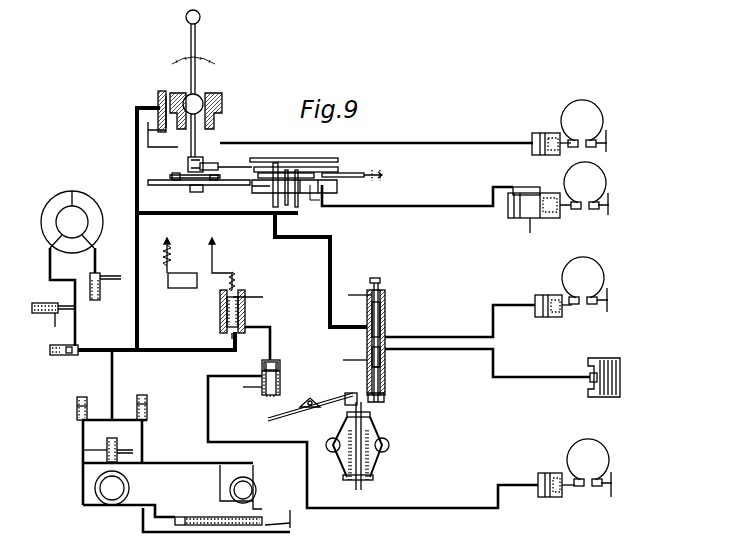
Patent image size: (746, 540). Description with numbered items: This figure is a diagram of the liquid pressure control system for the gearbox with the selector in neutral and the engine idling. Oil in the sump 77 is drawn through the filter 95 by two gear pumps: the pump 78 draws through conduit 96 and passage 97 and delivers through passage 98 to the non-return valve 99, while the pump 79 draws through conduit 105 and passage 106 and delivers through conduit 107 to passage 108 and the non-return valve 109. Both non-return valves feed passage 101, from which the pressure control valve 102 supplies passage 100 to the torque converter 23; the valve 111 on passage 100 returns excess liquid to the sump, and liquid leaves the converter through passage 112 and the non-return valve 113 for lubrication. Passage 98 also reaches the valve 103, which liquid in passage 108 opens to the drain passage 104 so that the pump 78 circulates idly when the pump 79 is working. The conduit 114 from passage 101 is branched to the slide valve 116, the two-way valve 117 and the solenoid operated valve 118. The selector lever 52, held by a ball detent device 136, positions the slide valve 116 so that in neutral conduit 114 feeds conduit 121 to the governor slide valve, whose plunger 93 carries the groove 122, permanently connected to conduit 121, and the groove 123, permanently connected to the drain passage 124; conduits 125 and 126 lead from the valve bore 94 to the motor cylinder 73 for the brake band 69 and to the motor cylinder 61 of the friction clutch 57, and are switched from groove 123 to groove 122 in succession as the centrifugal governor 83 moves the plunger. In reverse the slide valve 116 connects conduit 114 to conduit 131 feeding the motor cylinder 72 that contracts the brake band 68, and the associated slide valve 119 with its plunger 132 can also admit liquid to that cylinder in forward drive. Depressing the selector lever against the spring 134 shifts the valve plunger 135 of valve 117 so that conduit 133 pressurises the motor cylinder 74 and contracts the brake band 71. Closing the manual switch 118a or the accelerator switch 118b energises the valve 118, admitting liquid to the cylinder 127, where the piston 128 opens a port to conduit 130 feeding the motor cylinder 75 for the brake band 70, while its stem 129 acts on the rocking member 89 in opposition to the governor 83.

The selector lever 52 is at (197, 78).
The spring 134 is at (222, 112).
The two-way valve 117 is at (158, 103).
The valve plunger 135 is at (158, 117).
The conduit 121 is at (330, 261).
The slide valve 116 is at (292, 162).
The slide valve 119 is at (307, 193).
The ball detent device 136 is at (205, 186).
The plunger 132 is at (350, 172).
The conduit 133 is at (431, 142).
The conduit 131 is at (438, 205).
The motor cylinder 74 is at (540, 132).
The brake band 71 is at (573, 104).
The motor cylinder 72 is at (515, 218).
The brake band 68 is at (567, 176).
The motor cylinder 73 is at (538, 296).
The brake band 69 is at (568, 269).
The multi-plate friction clutch 57 is at (614, 358).
The motor cylinder 61 is at (590, 375).
The motor cylinder 75 is at (540, 473).
The brake band 70 is at (586, 440).
The conduit 125 is at (457, 337).
The conduit 126 is at (468, 350).
The torque converter 23 is at (85, 202).
The passage 112 is at (97, 262).
The non-return valve 113 is at (100, 285).
The passage 100 is at (77, 334).
The valve 111 is at (55, 303).
The pressure control valve 102 is at (70, 355).
The conduit 114 is at (110, 340).
The passage 101 is at (114, 375).
The switch 118a is at (197, 275).
The switch 118b is at (185, 288).
The solenoid operated valve 118 is at (247, 318).
The cylinder 127 is at (280, 363).
The piston 128 is at (262, 367).
The stem 129 is at (266, 395).
The conduit 130 is at (208, 411).
The valve plunger 93 is at (385, 310).
The circumferential groove 122 is at (368, 315).
The circumferential groove 123 is at (368, 344).
The drain passage 124 is at (350, 361).
The valve bore 94 is at (391, 365).
The centrifugal governor 83 is at (389, 443).
The rocking member 89 is at (332, 399).
The non-return valve 99 is at (77, 410).
The non-return valve 109 is at (147, 411).
The valve 103 is at (116, 452).
The drain passage 104 is at (133, 452).
The passage 98 is at (82, 480).
The passage 108 is at (207, 464).
The gear pump 78 is at (131, 486).
The conduit 107 is at (219, 487).
The gear pump 79 is at (256, 485).
The filter 95 is at (190, 517).
The conduit 96 is at (141, 508).
The passage 97 is at (202, 520).
The conduit 105 is at (290, 500).
The passage 106 is at (284, 507).
The sump 77 is at (291, 522).